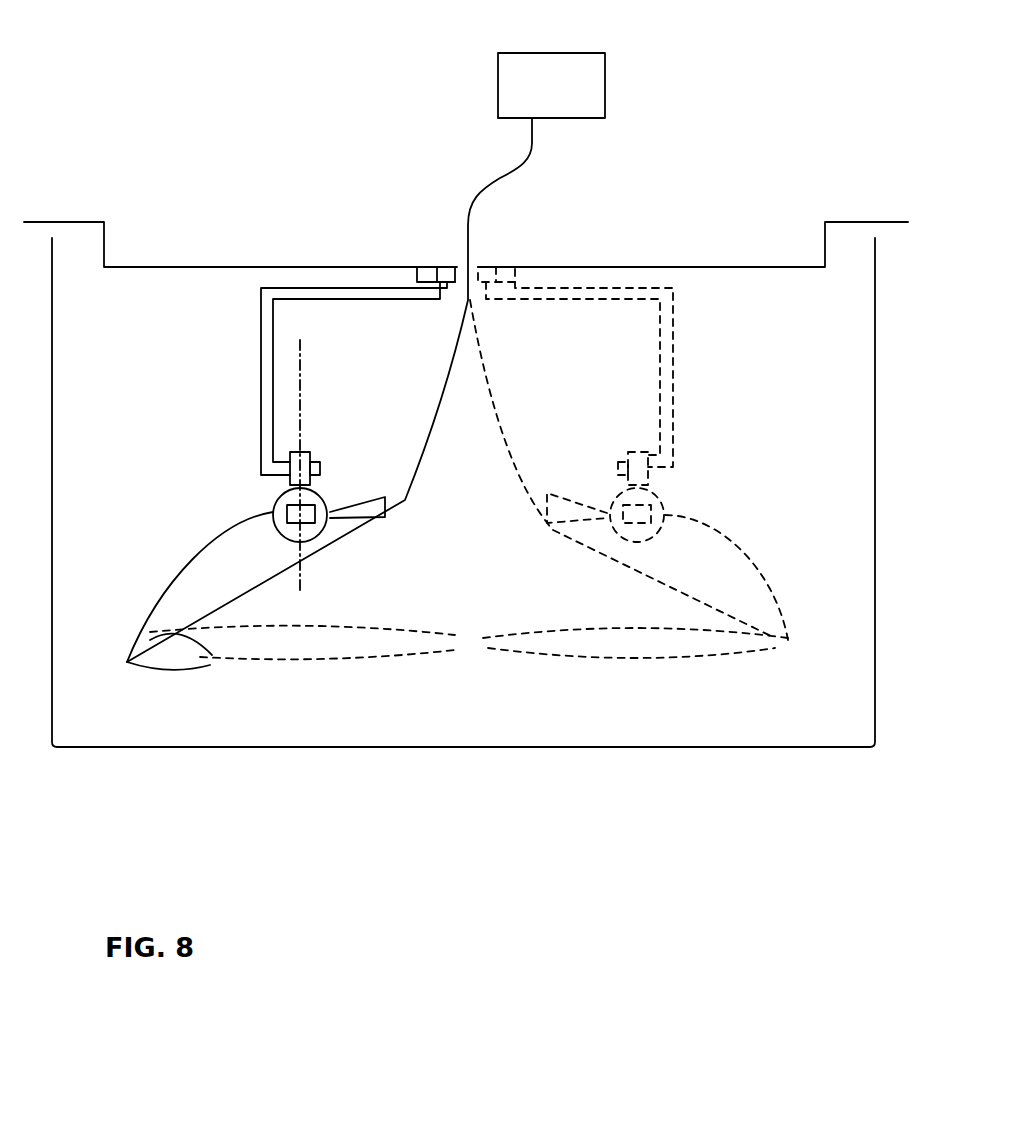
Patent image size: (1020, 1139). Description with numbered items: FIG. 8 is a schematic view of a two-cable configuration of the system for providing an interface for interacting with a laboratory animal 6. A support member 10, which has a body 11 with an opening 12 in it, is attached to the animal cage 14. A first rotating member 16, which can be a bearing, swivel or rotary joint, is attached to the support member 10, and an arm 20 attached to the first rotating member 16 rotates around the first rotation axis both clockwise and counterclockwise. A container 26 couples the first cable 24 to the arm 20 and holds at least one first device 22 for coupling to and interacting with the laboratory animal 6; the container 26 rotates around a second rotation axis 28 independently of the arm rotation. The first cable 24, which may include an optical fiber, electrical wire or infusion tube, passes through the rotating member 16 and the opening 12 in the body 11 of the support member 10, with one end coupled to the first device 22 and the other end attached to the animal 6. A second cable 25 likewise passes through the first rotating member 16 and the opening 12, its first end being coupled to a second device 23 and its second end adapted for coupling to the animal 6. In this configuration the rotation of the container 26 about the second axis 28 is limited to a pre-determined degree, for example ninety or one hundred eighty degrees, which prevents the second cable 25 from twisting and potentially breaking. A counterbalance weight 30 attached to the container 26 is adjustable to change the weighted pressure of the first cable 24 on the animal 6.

The laboratory animal 6 is at (197, 667).
The support member 10 is at (298, 262).
The body 11 is at (643, 268).
The opening 12 is at (473, 266).
The animal cage 14 is at (873, 453).
The first rotating member 16 is at (516, 278).
The arm 20 is at (261, 376).
The first device 22 is at (311, 525).
The second device 23 is at (605, 88).
The first cable 24 is at (180, 565).
The second cable 25 is at (532, 146).
The container 26 is at (272, 504).
The second rotation axis 28 is at (302, 400).
The counterbalance weight 30 is at (375, 497).